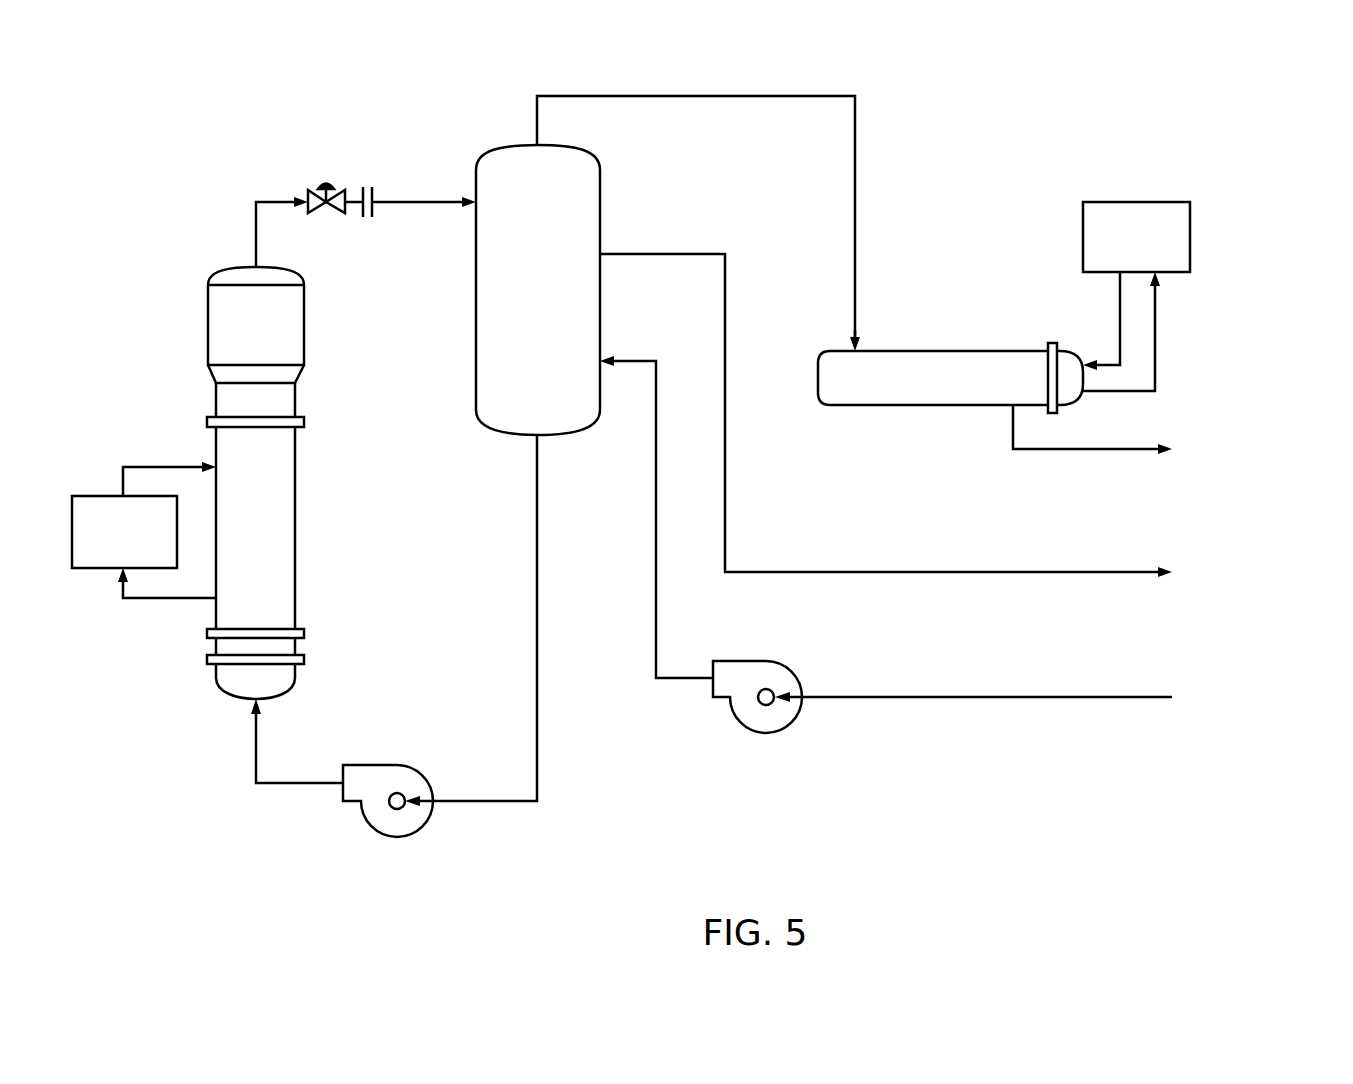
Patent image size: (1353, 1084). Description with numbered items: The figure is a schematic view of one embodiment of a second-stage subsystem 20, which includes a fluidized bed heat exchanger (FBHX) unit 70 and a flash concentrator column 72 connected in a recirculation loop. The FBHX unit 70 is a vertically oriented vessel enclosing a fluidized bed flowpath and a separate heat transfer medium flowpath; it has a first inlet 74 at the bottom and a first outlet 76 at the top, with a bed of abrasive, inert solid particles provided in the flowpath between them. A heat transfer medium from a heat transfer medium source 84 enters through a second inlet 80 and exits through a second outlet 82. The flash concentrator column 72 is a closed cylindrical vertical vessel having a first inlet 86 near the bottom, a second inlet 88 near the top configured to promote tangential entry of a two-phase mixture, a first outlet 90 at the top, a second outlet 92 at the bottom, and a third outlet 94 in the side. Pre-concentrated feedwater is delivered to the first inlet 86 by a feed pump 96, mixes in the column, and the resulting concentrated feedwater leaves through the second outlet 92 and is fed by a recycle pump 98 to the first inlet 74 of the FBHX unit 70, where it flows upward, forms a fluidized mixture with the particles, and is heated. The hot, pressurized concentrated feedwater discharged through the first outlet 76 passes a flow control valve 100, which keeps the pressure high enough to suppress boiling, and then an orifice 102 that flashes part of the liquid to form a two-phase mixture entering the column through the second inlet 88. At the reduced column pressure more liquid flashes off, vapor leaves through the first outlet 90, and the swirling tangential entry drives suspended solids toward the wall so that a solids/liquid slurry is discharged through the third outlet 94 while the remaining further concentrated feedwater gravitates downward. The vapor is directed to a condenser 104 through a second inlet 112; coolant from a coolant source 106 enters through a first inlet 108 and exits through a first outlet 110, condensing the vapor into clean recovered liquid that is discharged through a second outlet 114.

The second-stage subsystem 20 is at (980, 200).
The fluidized bed heat exchanger unit 70 is at (297, 528).
The flash concentrator column 72 is at (602, 224).
The first inlet 74 is at (262, 701).
The first outlet 76 is at (253, 265).
The second inlet 80 is at (215, 463).
The second outlet 82 is at (214, 601).
The heat transfer medium source 84 is at (102, 570).
The first inlet 86 is at (603, 368).
The second inlet 88 is at (475, 197).
The first outlet 90 is at (540, 143).
The second outlet 92 is at (539, 438).
The third outlet 94 is at (600, 258).
The feed pump 96 is at (794, 668).
The recycle pump 98 is at (414, 766).
The flow control valve 100 is at (312, 196).
The orifice 102 is at (376, 196).
The condenser 104 is at (907, 406).
The coolant source 106 is at (1168, 202).
The first inlet 108 is at (1085, 353).
The first outlet 110 is at (1084, 392).
The second inlet 112 is at (863, 350).
The second outlet 114 is at (1010, 406).